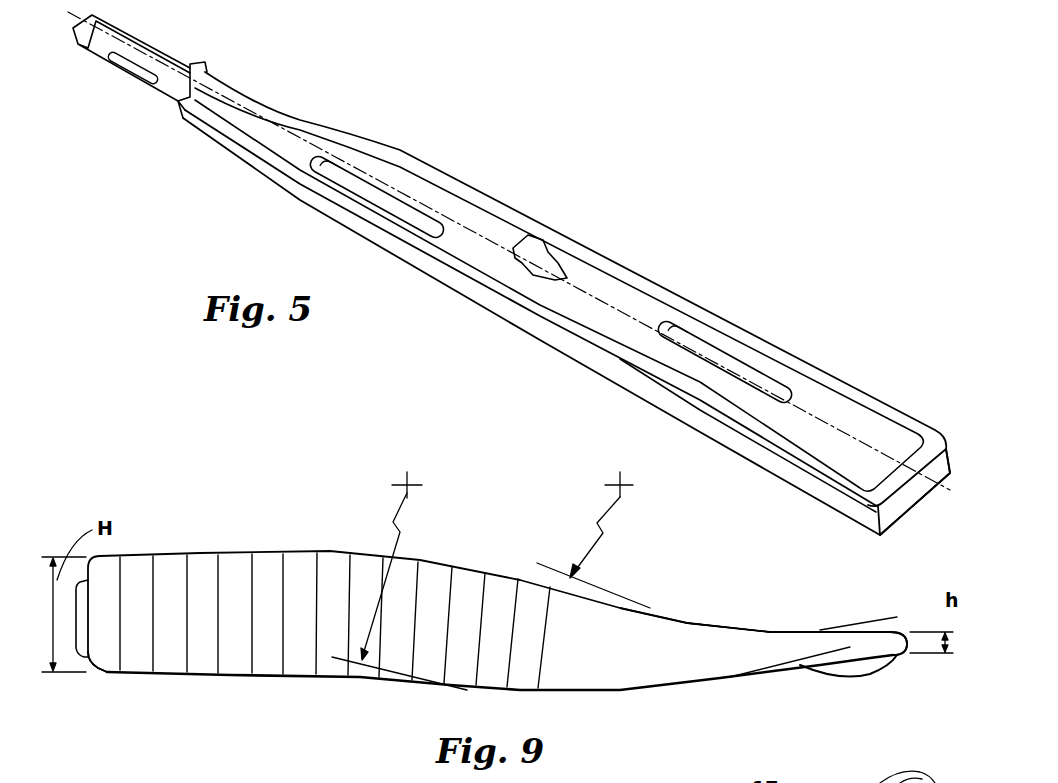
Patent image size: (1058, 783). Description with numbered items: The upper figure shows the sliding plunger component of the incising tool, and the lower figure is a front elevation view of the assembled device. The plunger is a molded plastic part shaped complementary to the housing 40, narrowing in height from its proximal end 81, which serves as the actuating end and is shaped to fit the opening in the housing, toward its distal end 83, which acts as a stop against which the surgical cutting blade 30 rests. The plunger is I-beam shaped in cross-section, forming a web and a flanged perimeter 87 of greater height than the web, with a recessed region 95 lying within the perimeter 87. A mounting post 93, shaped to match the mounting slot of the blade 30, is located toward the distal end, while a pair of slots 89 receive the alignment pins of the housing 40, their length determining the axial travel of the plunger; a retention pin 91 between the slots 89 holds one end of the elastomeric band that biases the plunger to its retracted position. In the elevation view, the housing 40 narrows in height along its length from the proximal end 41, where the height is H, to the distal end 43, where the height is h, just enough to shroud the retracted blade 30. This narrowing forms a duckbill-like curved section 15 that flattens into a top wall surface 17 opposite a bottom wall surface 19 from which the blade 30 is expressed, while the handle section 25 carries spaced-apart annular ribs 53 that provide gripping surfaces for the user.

In FIG. 5, the proximal end 81 is at (898, 512).
In FIG. 9, the proximal end 81 is at (78, 657).
In FIG. 5, the distal end 83 is at (117, 28).
In FIG. 5, the flanged perimeter 87 is at (522, 322).
In FIG. 5, the slots 89 is at (385, 208).
In FIG. 5, the retention pin 91 is at (540, 243).
In FIG. 5, the mounting post 93 is at (98, 48).
In FIG. 5, the channel 95 is at (835, 427).
In FIG. 9, the curved section 15 is at (683, 650).
In FIG. 9, the top wall surface 17 is at (670, 618).
In FIG. 9, the bottom wall surface 19 is at (655, 693).
In FIG. 9, the handle section 25 is at (263, 560).
In FIG. 9, the surgical cutting blade 30 is at (860, 668).
In FIG. 9, the housing 40 is at (410, 557).
In FIG. 9, the proximal end 41 is at (93, 670).
In FIG. 9, the distal end 43 is at (913, 647).
In FIG. 9, the annular ribs 53 is at (165, 570).